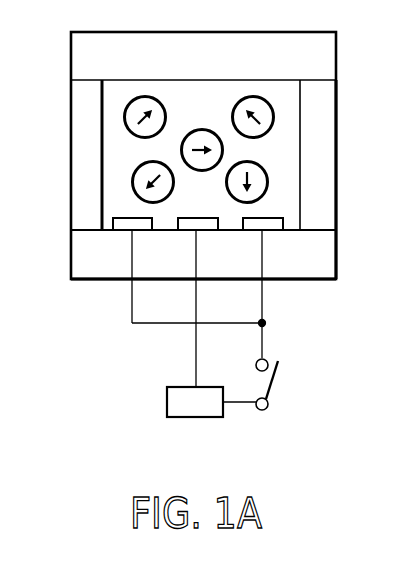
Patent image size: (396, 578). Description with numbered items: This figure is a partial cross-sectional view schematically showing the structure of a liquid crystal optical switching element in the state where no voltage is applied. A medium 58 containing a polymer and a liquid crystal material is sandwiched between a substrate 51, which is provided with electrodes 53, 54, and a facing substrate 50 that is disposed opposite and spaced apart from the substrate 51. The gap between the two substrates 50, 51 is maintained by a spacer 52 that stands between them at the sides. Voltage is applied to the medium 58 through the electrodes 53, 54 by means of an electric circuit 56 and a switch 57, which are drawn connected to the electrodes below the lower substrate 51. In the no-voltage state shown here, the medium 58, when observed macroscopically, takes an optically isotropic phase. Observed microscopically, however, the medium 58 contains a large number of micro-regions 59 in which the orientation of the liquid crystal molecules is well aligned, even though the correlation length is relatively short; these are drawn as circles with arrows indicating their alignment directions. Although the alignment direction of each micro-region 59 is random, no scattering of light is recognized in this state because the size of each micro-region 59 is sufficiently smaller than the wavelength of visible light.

The substrate 50 is at (301, 48).
The substrate 51 is at (320, 263).
The spacer 52 is at (322, 139).
The electrode 53 is at (123, 231).
The electrode 54 is at (188, 231).
The electric circuit 56 is at (187, 418).
The switch 57 is at (282, 384).
The medium 58 is at (107, 182).
The micro-region 59 is at (125, 111).